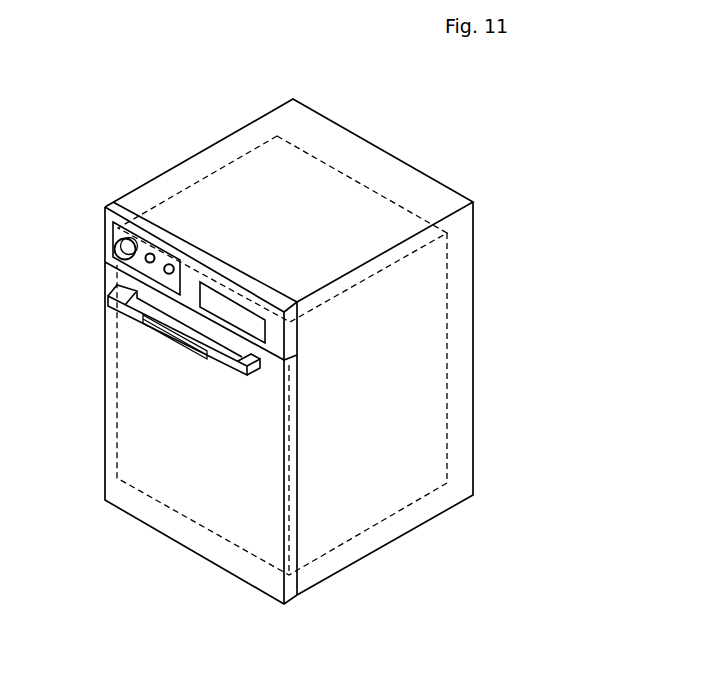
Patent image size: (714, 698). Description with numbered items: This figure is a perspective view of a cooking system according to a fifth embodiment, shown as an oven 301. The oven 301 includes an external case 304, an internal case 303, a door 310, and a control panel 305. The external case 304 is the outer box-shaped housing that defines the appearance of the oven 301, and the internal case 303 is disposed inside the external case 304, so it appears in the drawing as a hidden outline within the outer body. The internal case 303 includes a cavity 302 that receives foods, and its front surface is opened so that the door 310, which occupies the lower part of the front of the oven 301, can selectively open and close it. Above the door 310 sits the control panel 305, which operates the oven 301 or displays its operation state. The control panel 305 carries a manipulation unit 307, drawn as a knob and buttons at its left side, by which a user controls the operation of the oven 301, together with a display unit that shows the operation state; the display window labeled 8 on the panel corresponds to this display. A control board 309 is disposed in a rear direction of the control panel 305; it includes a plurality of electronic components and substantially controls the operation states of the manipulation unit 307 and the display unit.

The oven 301 is at (361, 124).
The cavity 302 is at (253, 198).
The internal case 303 is at (384, 193).
The external case 304 is at (474, 268).
The control panel 305 is at (276, 350).
The manipulation unit 307 is at (142, 250).
The control board 309 is at (193, 265).
The door 310 is at (112, 380).
The display 8 is at (248, 318).